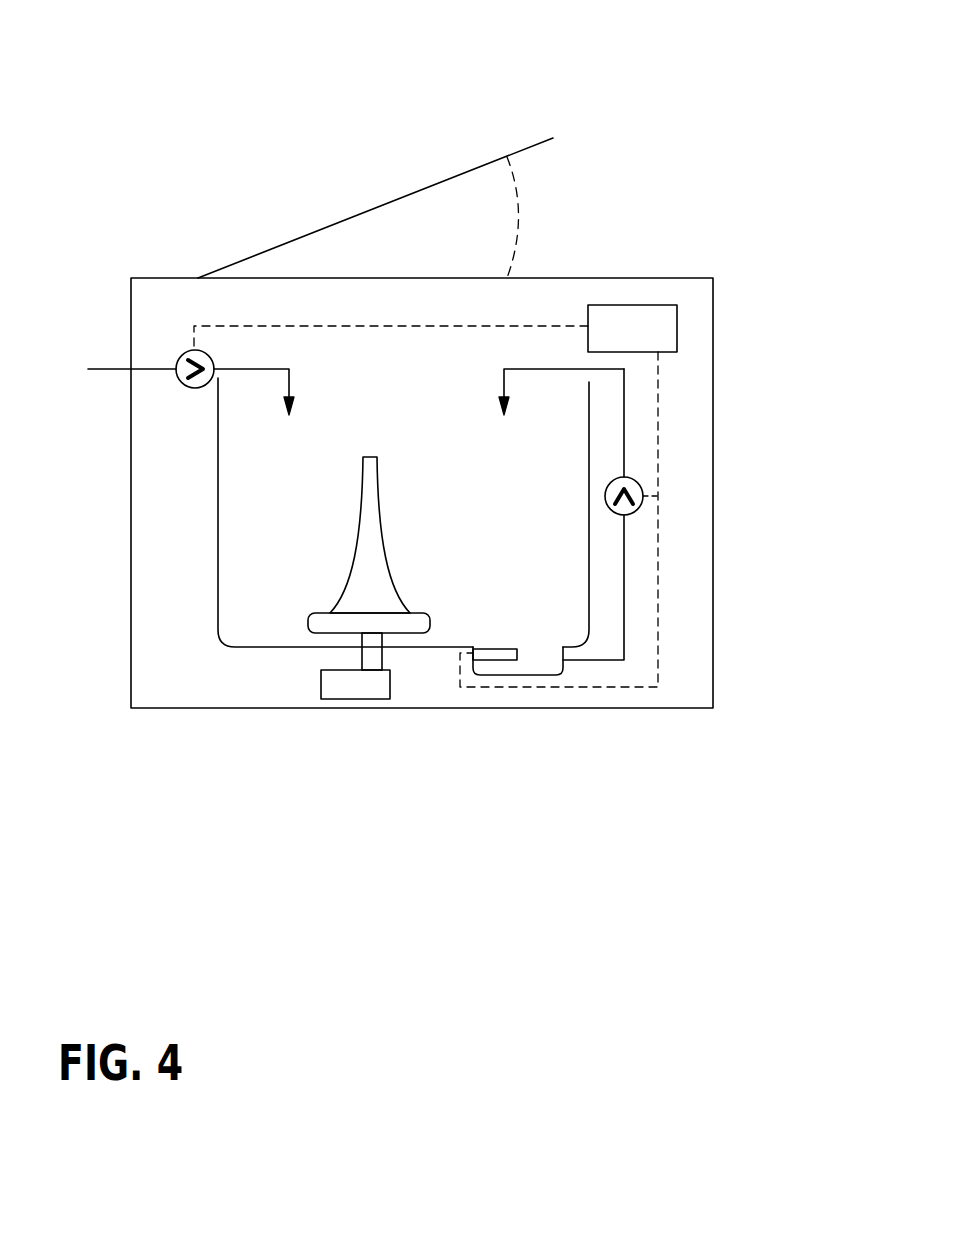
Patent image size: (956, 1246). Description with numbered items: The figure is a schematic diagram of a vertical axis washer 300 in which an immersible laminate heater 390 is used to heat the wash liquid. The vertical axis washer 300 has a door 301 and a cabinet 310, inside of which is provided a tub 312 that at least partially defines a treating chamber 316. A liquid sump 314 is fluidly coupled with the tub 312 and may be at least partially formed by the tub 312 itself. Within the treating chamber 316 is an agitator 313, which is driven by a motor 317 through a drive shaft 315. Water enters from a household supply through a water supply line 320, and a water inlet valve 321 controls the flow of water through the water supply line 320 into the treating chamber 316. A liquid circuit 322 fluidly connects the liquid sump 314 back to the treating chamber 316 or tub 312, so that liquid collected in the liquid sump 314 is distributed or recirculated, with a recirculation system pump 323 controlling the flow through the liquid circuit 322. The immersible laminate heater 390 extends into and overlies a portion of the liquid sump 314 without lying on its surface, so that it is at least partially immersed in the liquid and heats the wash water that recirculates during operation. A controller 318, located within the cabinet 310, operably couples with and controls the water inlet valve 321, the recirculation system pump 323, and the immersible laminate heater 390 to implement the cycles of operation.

The vertical axis washer 300 is at (533, 35).
The door 301 is at (300, 238).
The cabinet 310 is at (660, 278).
The tub 312 is at (589, 440).
The agitator 313 is at (382, 524).
The liquid sump 314 is at (540, 677).
The drive shaft 315 is at (360, 653).
The treating chamber 316 is at (403, 512).
The motor 317 is at (337, 699).
The controller 318 is at (677, 328).
The water supply line 320 is at (100, 369).
The water inlet valve 321 is at (183, 353).
The liquid circuit 322 is at (625, 553).
The recirculation system pump 323 is at (640, 478).
The immersible laminate heater 390 is at (492, 660).